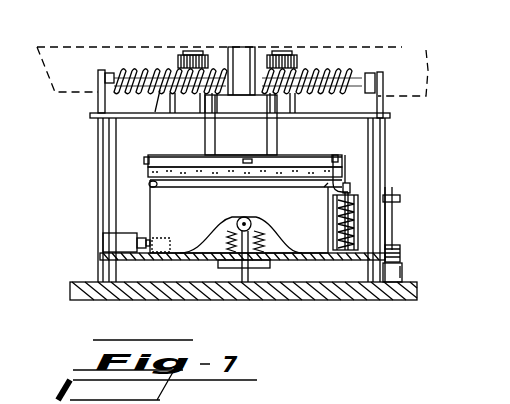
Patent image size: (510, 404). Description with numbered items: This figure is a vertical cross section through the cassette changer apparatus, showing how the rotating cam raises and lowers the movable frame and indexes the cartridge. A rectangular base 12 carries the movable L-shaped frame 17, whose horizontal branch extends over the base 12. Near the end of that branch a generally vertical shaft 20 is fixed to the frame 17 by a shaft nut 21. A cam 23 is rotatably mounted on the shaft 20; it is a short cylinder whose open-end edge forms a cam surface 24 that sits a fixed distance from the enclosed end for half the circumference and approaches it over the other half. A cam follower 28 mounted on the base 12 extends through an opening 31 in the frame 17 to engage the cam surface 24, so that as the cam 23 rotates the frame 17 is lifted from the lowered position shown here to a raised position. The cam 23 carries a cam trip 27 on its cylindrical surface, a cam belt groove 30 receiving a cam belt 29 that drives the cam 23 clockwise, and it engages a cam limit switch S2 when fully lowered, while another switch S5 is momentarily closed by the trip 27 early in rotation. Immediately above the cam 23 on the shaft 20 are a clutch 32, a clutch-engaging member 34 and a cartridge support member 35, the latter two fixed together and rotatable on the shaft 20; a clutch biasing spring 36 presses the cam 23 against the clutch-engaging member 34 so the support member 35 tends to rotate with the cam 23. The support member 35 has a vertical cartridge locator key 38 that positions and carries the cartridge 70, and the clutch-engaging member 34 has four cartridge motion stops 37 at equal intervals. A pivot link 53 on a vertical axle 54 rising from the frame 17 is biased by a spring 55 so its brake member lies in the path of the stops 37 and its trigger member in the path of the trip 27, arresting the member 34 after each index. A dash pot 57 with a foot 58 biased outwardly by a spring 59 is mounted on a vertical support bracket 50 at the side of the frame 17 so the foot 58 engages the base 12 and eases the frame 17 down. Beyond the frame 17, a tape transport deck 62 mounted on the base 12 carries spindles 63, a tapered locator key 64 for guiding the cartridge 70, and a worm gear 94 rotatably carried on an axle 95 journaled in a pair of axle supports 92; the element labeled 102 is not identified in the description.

The base 12 is at (397, 298).
The movable L-shaped frame 17 is at (100, 255).
The vertical shaft 20 is at (240, 58).
The shaft nut 21 is at (270, 258).
The cam 23 is at (217, 216).
The cam surface 24 is at (280, 255).
The cam trip 27 is at (157, 238).
The cam follower 28 is at (252, 200).
The cam belt 29 is at (150, 185).
The cam belt groove 30 is at (287, 186).
The opening 31 is at (228, 260).
The clutch 32 is at (148, 175).
The clutch-engaging member 34 is at (178, 157).
The cartridge support member 35 is at (248, 133).
The clutch biasing spring 36 is at (207, 256).
The cartridge motion stops 37 is at (144, 159).
The cartridge locator key 38 is at (257, 50).
The vertical support bracket 50 is at (383, 190).
The pivot link 53 is at (345, 168).
The vertical axle 54 is at (349, 188).
The spring 55 is at (345, 212).
The dash pot 57 is at (392, 227).
The foot 58 is at (402, 275).
The spring 59 is at (400, 255).
The tape transport deck 62 is at (360, 108).
The spindles 63 is at (203, 30).
The tapered locator key 64 is at (165, 68).
The cartridge 70 is at (403, 48).
The axle supports 92 is at (98, 83).
The worm gear 94 is at (348, 70).
The axle 95 is at (103, 70).
The collar 102 is at (370, 73).
The cam limit switch S2 is at (110, 243).
The switch S5 is at (128, 300).